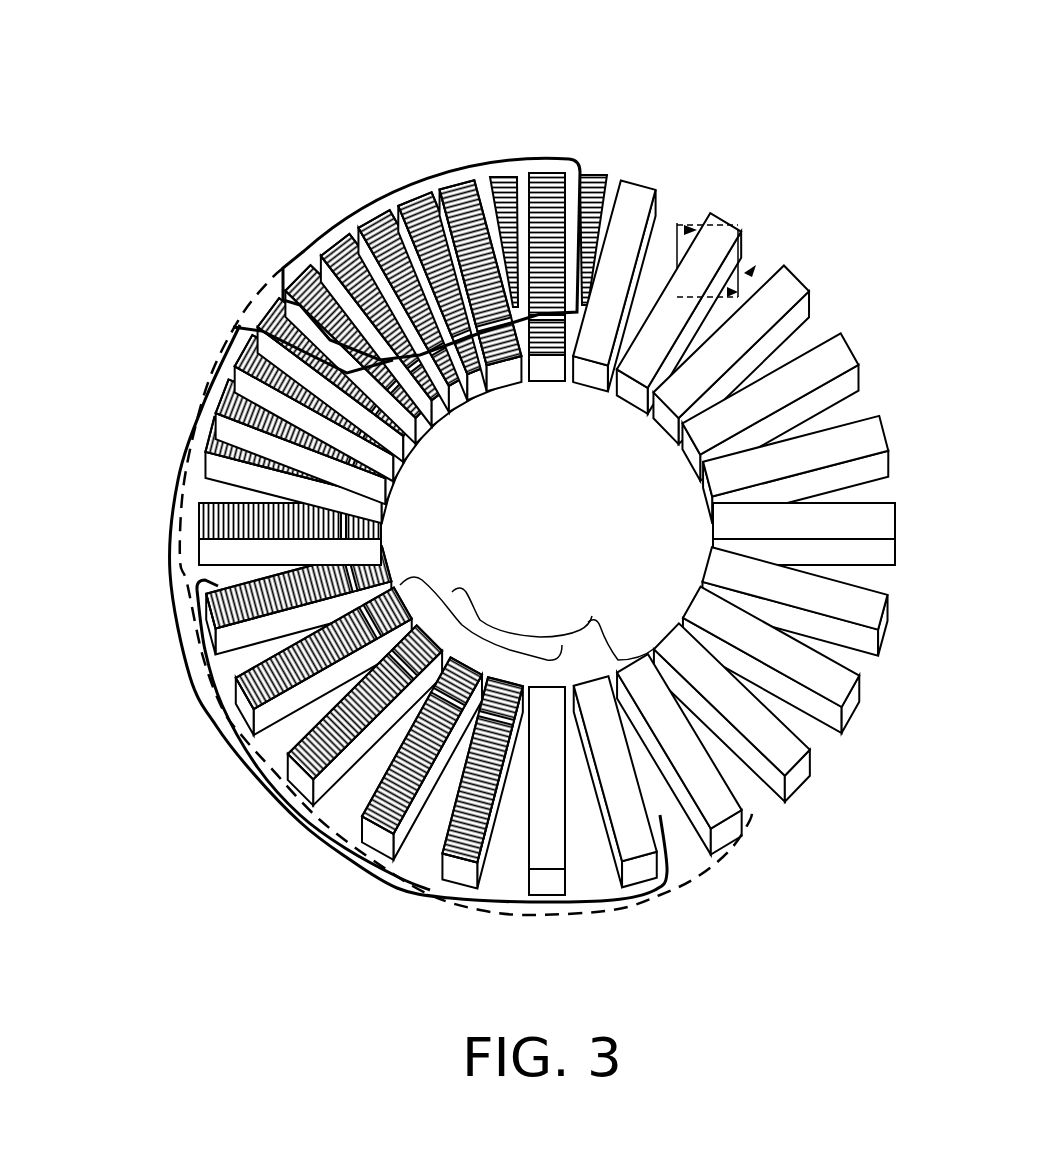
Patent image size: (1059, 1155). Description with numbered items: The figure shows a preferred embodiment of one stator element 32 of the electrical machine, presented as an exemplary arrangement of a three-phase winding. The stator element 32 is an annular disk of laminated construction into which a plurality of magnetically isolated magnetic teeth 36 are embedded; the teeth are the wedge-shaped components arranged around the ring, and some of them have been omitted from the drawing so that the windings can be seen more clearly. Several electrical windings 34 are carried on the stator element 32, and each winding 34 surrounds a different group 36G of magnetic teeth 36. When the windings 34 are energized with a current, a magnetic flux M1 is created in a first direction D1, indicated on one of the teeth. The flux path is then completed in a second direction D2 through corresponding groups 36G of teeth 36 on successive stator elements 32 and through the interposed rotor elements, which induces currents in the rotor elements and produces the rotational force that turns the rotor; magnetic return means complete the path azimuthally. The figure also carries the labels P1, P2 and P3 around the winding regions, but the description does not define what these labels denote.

The stator element 32 is at (477, 487).
The electrical winding 34 is at (235, 640).
The magnetic tooth 36 is at (640, 185).
The group of magnetic teeth 36G is at (138, 552).
The first direction D1 is at (735, 228).
The second direction D2 is at (706, 212).
The magnetic flux M1 is at (750, 270).
The first plane P1 is at (720, 912).
The second plane P2 is at (612, 943).
The third plane P3 is at (432, 928).